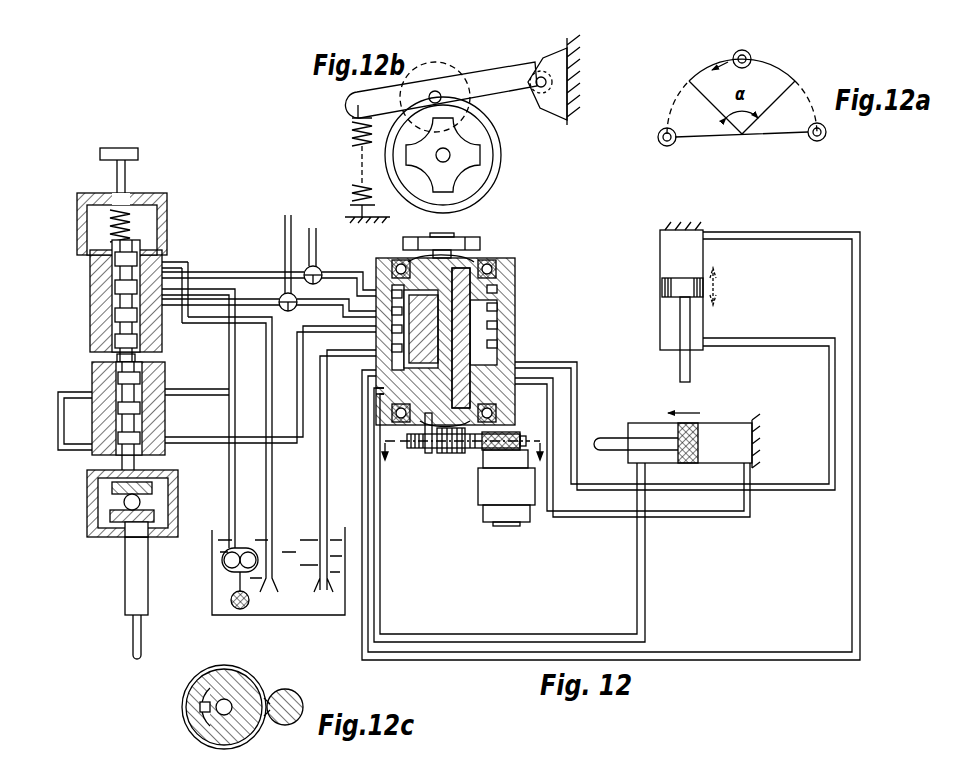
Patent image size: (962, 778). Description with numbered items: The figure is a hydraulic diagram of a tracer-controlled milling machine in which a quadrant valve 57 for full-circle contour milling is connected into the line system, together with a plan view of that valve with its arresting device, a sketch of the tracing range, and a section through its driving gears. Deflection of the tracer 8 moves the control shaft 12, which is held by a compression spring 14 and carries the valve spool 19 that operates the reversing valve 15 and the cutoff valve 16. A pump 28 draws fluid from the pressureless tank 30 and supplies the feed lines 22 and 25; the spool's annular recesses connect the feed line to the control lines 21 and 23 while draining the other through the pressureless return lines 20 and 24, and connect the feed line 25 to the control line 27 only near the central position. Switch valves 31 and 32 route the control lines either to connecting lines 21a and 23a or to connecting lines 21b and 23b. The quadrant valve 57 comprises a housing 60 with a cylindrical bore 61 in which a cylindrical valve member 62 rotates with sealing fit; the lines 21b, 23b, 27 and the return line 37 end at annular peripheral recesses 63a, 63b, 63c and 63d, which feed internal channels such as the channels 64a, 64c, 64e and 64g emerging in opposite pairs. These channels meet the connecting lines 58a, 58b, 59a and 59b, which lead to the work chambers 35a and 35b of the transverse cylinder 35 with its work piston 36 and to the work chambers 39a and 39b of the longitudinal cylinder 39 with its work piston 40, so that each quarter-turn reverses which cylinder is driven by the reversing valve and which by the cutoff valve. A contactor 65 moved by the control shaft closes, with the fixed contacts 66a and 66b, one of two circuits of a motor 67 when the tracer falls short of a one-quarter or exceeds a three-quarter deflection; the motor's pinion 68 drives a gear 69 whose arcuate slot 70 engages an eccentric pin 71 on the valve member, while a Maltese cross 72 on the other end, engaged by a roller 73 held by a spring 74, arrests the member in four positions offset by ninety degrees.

In FIG. 12, the tracer 8 is at (136, 630).
In FIG. 12, the control shaft 12 is at (130, 463).
In FIG. 12, the compression spring 14 is at (108, 231).
In FIG. 12, the reversing valve 15 is at (88, 317).
In FIG. 12, the cutoff valve 16 is at (90, 382).
In FIG. 12, the valve spool 19 is at (125, 346).
In FIG. 12, the pressureless return line 20 is at (184, 260).
In FIG. 12, the control line 21 is at (262, 270).
In FIG. 12, the connecting line 21a is at (312, 226).
In FIG. 12, the connecting line 21b is at (360, 270).
In FIG. 12, the feed line 22 is at (219, 287).
In FIG. 12, the control line 23 is at (258, 330).
In FIG. 12, the connecting line 23a is at (287, 213).
In FIG. 12, the connecting line 23b is at (338, 304).
In FIG. 12, the pressureless return line 24 is at (180, 323).
In FIG. 12, the feed line 25 is at (205, 397).
In FIG. 12, the control line 27 is at (291, 445).
In FIG. 12, the pump 28 is at (220, 557).
In FIG. 12, the tank 30 is at (303, 600).
In FIG. 12, the switch valve 31 is at (318, 267).
In FIG. 12, the switch valve 32 is at (291, 312).
In FIG. 12, the transverse cylinder 35 is at (658, 314).
In FIG. 12, the work chamber 35a is at (697, 323).
In FIG. 12, the work chamber 35b is at (695, 259).
In FIG. 12, the work piston 36 is at (662, 287).
In FIG. 12, the pressureless return line 37 is at (322, 457).
In FIG. 12, the longitudinal cylinder 39 is at (762, 445).
In FIG. 12, the work chamber 39a is at (655, 432).
In FIG. 12, the work chamber 39b is at (722, 434).
In FIG. 12, the work piston 40 is at (688, 452).
In FIG. 12, the quadrant valve 57 is at (516, 258).
In FIG. 12, the connecting line 58a is at (578, 406).
In FIG. 12, the connecting line 58b is at (362, 630).
In FIG. 12, the connecting line 59a is at (607, 519).
In FIG. 12, the connecting line 59b is at (376, 503).
In FIG. 12, the housing 60 is at (510, 270).
In FIG. 12, the cylindrical bore 61 is at (494, 262).
In FIG. 12, the valve member 62 is at (410, 275).
In FIG. 12, the annular peripheral recess 63a is at (497, 289).
In FIG. 12, the annular peripheral recess 63b is at (497, 307).
In FIG. 12, the annular peripheral recess 63c is at (497, 325).
In FIG. 12, the annular peripheral recess 63d is at (497, 344).
In FIG. 12, the channel 64a is at (392, 326).
In FIG. 12, the channel 64c is at (459, 283).
In FIG. 12, the channel 64e is at (372, 358).
In FIG. 12, the channel 64g is at (420, 396).
In FIG. 12, the contactor 65 is at (100, 153).
In FIG. 12, the fixed contact 66a is at (127, 168).
In FIG. 12, the fixed contact 66b is at (125, 137).
In FIG. 12, the motor 67 is at (528, 516).
In FIG. 12, the pinion 68 is at (524, 440).
In FIG. 12C, the pinion 68 is at (300, 702).
In FIG. 12, the gear 69 is at (452, 445).
In FIG. 12C, the gear 69 is at (228, 680).
In FIG. 12C, the arcuate slot 70 is at (196, 727).
In FIG. 12, the pin 71 is at (486, 258).
In FIG. 12C, the pin 71 is at (200, 706).
In FIG. 12B, the Maltese cross 72 is at (450, 160).
In FIG. 12B, the roller 73 is at (437, 62).
In FIG. 12B, the spring 74 is at (352, 140).